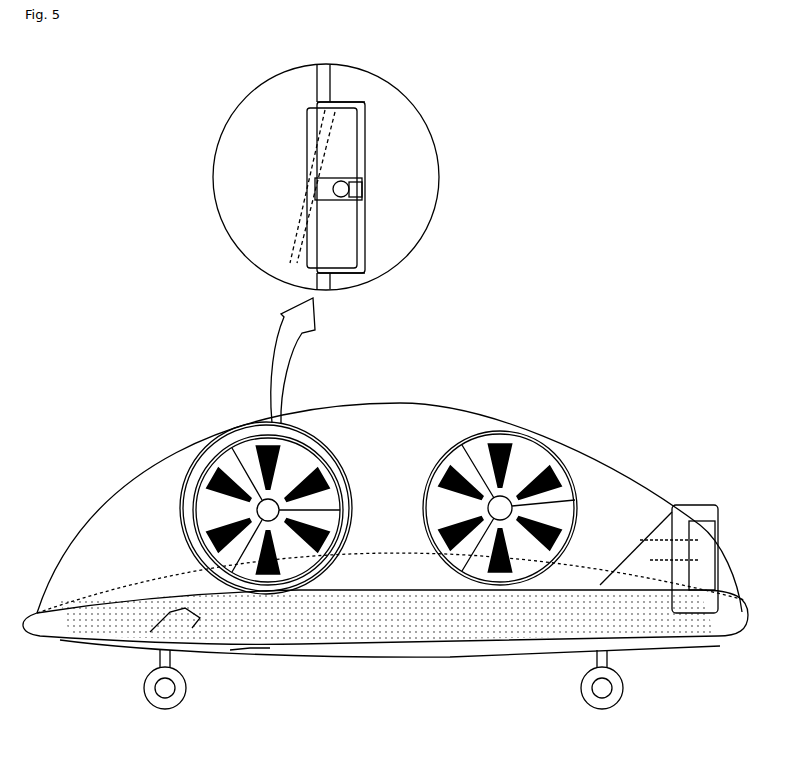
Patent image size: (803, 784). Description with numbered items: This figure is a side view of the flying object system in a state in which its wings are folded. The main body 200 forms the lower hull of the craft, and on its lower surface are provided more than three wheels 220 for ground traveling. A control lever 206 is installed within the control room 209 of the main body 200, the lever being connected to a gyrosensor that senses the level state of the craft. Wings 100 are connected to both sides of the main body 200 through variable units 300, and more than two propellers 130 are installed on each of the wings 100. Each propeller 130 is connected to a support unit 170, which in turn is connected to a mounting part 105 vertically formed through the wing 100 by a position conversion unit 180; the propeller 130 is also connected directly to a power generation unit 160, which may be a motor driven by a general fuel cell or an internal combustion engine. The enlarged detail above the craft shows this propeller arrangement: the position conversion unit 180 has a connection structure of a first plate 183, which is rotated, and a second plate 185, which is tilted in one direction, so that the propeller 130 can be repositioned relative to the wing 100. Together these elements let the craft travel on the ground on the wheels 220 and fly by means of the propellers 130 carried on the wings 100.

The wing 100 is at (385, 569).
The mounting part 105 is at (297, 445).
The propeller 130 is at (307, 184).
The power generation unit 160 is at (334, 158).
The support unit 170 is at (362, 157).
The position conversion unit 180 is at (431, 236).
The first plate 183 is at (362, 210).
The second plate 185 is at (362, 228).
The main body 200 is at (495, 644).
The control lever 206 is at (170, 612).
The control room 209 is at (248, 648).
The wheel 220 is at (602, 711).
The variable unit 300 is at (630, 632).